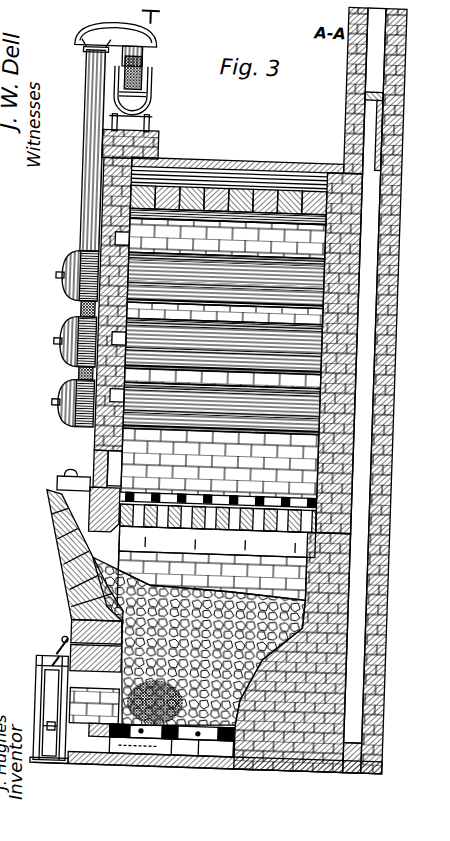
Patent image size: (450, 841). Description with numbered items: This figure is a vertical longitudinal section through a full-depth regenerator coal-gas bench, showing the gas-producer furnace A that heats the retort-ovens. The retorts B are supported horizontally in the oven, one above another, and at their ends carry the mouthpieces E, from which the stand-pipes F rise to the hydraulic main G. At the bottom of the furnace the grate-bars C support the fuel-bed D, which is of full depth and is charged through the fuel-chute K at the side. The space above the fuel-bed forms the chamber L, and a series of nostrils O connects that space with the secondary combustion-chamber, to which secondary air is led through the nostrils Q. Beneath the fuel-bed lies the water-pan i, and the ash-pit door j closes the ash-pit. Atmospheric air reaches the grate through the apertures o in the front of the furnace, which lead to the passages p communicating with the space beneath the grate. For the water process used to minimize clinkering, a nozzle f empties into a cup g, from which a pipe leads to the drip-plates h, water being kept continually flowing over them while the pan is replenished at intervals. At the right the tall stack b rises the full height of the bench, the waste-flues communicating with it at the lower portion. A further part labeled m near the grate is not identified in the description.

The gas-producer furnace A is at (95, 437).
The retorts B is at (412, 389).
The stack b is at (369, 128).
The grate-bars C is at (165, 730).
The fuel-bed D is at (200, 600).
The mouthpieces of the retorts E is at (62, 268).
The stand-pipes F is at (74, 90).
The hydraulic main G is at (142, 101).
The fuel-chute K is at (93, 517).
The chamber L is at (406, 583).
The nostrils O is at (262, 519).
The nostrils Q is at (188, 496).
The passages p is at (185, 741).
The water-pan i is at (211, 748).
The bar m is at (134, 748).
The cup g is at (50, 675).
The drip-plates h is at (111, 730).
The ash-pit door j is at (56, 730).
The nozzle f is at (63, 656).
The apertures o is at (72, 642).